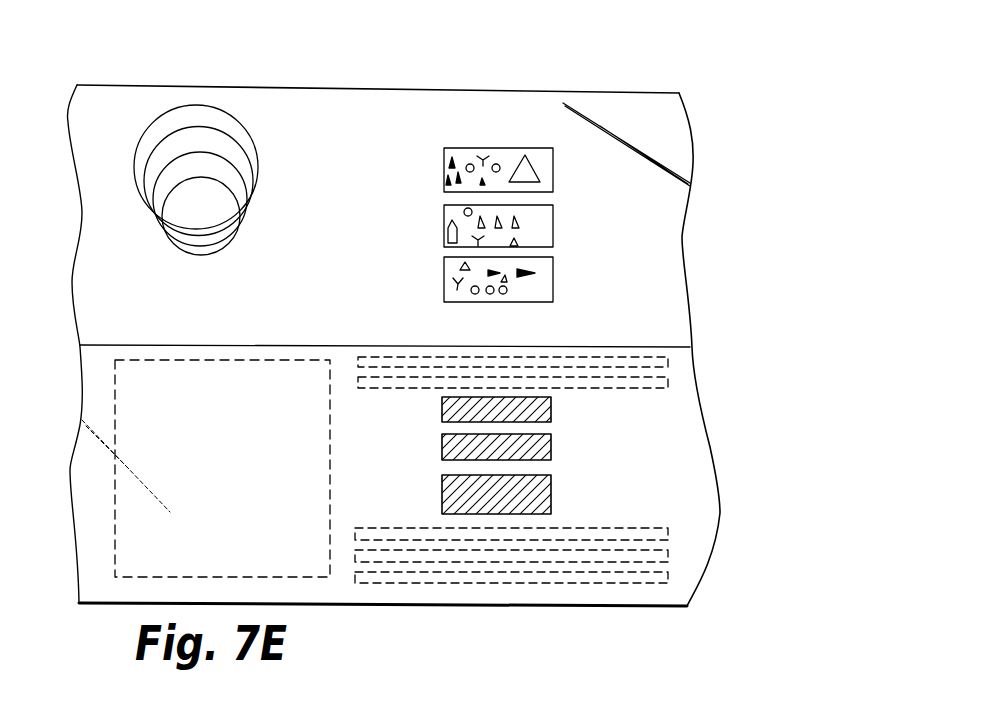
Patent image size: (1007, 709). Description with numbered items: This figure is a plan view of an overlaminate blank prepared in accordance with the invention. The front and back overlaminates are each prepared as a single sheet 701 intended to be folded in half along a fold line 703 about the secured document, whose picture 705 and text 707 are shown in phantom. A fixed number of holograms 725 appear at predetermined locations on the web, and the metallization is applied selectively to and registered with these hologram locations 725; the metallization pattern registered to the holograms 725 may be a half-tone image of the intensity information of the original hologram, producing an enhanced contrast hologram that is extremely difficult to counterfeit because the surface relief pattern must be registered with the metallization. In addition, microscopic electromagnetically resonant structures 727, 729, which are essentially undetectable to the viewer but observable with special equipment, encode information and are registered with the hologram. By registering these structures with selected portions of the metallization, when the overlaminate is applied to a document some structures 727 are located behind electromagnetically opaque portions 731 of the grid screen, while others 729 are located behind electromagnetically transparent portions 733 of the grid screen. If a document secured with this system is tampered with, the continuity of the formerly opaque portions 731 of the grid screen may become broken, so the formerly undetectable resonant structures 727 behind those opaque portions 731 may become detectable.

The single sheet 701 is at (60, 103).
The fold line 703 is at (680, 348).
The picture 705 is at (113, 515).
The text 707 is at (668, 364).
The hologram 725 is at (240, 122).
The electromagnetically resonant structure 727 is at (443, 278).
The electromagnetically resonant structure 729 is at (553, 225).
The opaque portion of grid screen 731 is at (551, 414).
The transparent portion of grid screen 733 is at (551, 455).